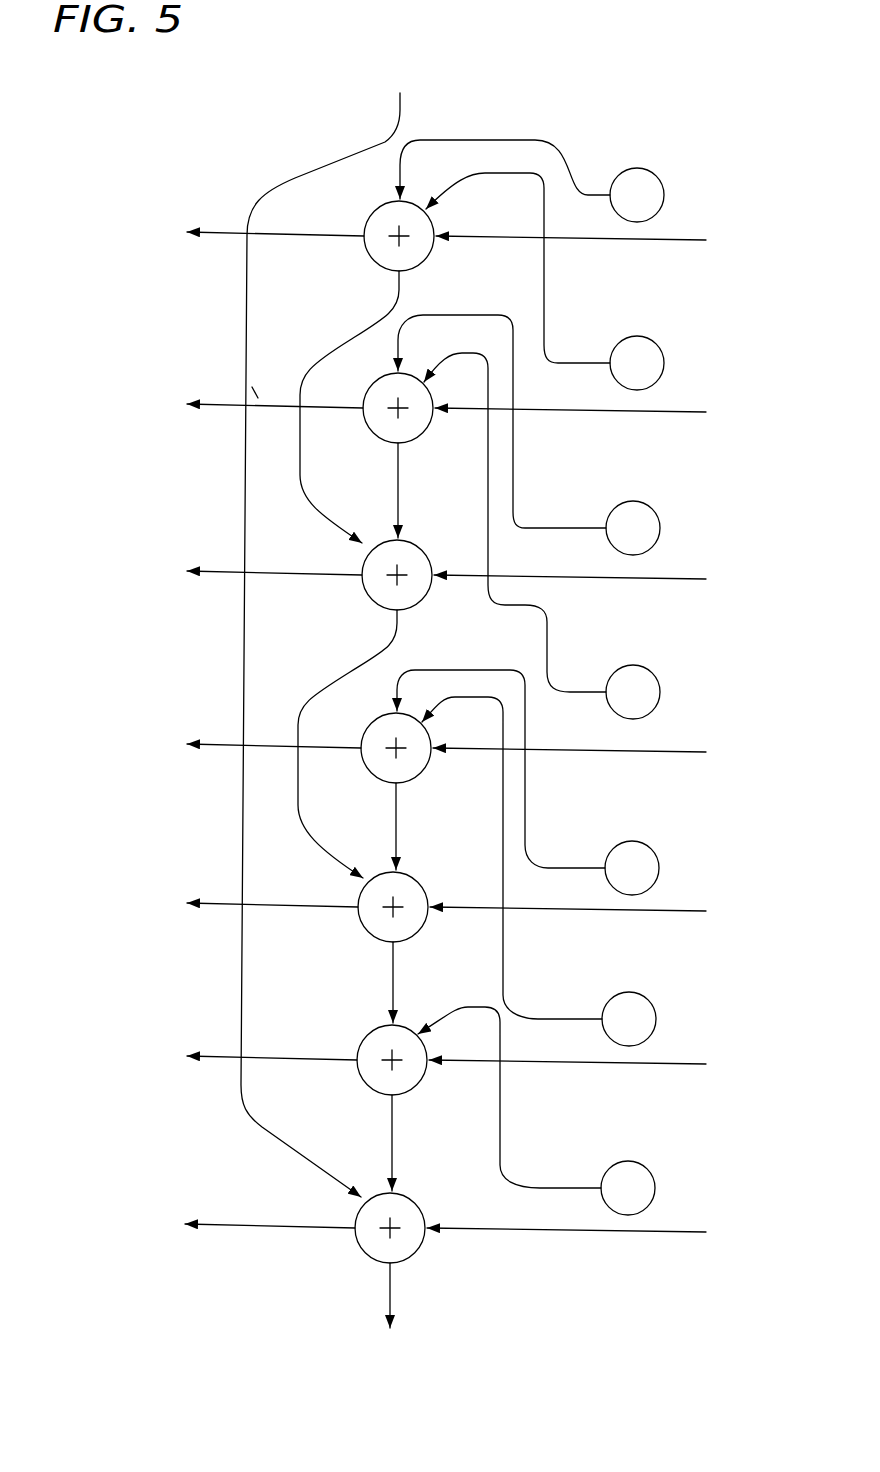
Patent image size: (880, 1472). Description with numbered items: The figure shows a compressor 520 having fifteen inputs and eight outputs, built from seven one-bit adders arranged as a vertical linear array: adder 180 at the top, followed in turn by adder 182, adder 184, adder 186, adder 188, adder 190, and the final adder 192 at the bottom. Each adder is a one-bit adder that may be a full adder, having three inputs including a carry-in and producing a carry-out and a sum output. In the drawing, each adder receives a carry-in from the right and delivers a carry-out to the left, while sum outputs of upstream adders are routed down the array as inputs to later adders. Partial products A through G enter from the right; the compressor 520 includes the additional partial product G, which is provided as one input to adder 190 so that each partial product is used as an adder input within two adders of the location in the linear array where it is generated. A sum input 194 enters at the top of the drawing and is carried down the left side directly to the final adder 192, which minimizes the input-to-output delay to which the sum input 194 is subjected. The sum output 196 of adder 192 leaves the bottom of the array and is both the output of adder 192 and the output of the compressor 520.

The adder 180 is at (367, 255).
The adder 182 is at (375, 442).
The adder 184 is at (365, 598).
The adder 186 is at (375, 783).
The adder 188 is at (362, 928).
The adder 190 is at (362, 1081).
The final adder 192 is at (360, 1260).
The sum input 194 is at (292, 177).
The sum output 196 is at (395, 1290).
The compressor 520 is at (440, 733).